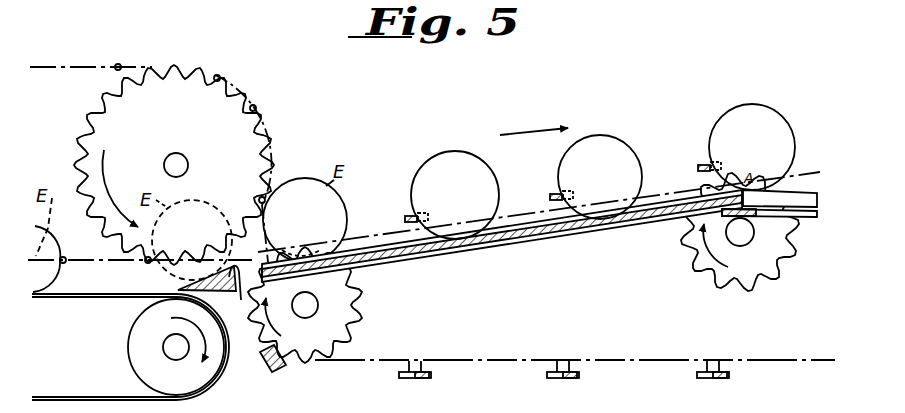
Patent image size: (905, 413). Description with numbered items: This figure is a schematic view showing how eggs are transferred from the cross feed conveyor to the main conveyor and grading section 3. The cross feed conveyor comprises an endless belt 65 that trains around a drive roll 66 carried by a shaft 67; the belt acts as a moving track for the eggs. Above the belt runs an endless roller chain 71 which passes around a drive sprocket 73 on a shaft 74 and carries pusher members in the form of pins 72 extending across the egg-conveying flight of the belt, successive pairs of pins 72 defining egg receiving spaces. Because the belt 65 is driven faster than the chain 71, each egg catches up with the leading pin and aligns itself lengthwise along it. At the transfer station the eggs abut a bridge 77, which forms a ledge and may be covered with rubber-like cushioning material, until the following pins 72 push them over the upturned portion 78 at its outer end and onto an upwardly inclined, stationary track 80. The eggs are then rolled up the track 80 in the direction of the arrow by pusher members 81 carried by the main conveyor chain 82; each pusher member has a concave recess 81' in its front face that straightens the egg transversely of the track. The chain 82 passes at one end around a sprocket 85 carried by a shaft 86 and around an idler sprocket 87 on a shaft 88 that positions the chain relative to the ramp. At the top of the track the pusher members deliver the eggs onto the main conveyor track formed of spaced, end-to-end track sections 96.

The main conveyor and grading section 3 is at (656, 162).
The endless belt 65 is at (77, 396).
The drive roll 66 is at (137, 331).
The shaft 67 is at (172, 351).
The endless roller chain 71 is at (68, 67).
The pins 72 is at (121, 66).
The drive sprocket 73 is at (253, 104).
The shaft 74 is at (176, 153).
The bridge 77 is at (185, 290).
The upturned portion 78 is at (231, 291).
The inclined track 80 is at (522, 250).
The pusher members 81 is at (550, 279).
The recess 81' is at (305, 220).
The main conveyor chain 82 is at (524, 206).
The sprocket 85 is at (352, 318).
The shaft 86 is at (315, 302).
The idler sprocket 87 is at (684, 246).
The shaft 88 is at (745, 241).
The track sections 96 is at (815, 217).